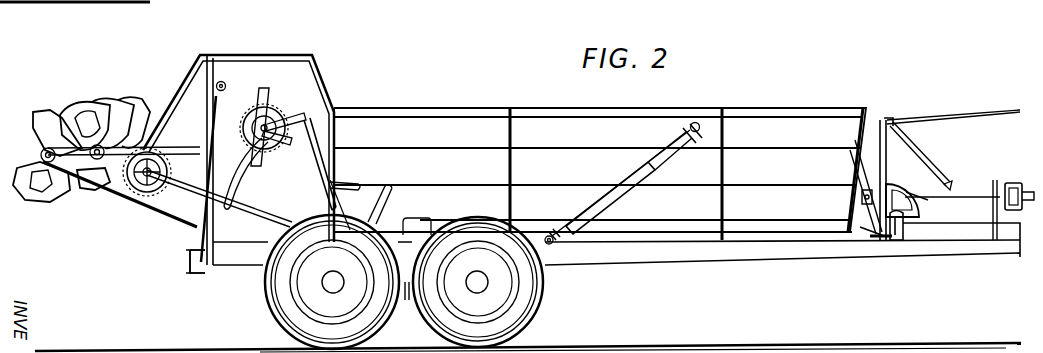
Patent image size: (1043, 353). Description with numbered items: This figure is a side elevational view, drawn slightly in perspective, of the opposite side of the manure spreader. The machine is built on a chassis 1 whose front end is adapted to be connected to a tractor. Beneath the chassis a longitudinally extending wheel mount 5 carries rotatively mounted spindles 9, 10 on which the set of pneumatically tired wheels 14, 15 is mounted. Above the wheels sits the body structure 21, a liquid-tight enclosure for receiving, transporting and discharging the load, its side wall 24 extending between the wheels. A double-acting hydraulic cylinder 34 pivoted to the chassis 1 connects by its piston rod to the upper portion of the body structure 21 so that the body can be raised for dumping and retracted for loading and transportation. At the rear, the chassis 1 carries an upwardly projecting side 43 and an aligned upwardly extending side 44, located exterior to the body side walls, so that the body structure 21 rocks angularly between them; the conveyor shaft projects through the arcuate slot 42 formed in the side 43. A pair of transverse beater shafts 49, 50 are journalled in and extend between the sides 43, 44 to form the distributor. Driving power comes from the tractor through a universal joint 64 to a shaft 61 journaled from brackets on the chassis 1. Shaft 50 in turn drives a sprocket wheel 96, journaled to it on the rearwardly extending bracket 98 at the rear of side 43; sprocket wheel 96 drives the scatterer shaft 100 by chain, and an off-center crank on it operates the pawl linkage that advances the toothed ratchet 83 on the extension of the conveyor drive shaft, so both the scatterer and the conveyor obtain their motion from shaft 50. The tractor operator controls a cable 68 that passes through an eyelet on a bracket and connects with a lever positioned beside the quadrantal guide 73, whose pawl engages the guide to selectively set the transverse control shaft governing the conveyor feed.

The chassis 1 is at (238, 258).
The wheel mount 5 is at (406, 302).
The spindle 9 is at (332, 282).
The spindle 10 is at (473, 290).
The pneumatically tired wheel 14 is at (272, 313).
The pneumatically tired wheel 15 is at (533, 313).
The body structure 21 is at (529, 97).
The side wall 24 is at (590, 157).
The hydraulic cylinder 34 is at (646, 168).
The arcuate slot 42 is at (231, 182).
The upwardly projecting side 43 is at (235, 78).
The upwardly extending side 44 is at (317, 73).
The beater shaft 49 is at (221, 81).
The beater shaft 50 is at (148, 208).
The shaft 61 is at (970, 194).
The universal joint 64 is at (1012, 212).
The cable 68 is at (947, 114).
The quadrantal guide 73 is at (908, 200).
The ratchet 83 is at (279, 107).
The sprocket wheel 96 is at (166, 148).
The rearwardly extending bracket 98 is at (182, 212).
The scatterer shaft 100 is at (42, 175).